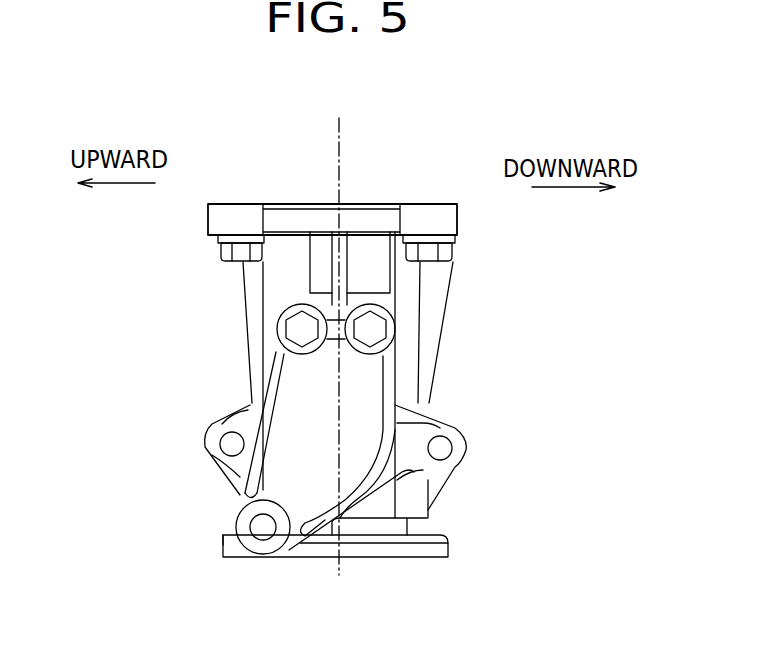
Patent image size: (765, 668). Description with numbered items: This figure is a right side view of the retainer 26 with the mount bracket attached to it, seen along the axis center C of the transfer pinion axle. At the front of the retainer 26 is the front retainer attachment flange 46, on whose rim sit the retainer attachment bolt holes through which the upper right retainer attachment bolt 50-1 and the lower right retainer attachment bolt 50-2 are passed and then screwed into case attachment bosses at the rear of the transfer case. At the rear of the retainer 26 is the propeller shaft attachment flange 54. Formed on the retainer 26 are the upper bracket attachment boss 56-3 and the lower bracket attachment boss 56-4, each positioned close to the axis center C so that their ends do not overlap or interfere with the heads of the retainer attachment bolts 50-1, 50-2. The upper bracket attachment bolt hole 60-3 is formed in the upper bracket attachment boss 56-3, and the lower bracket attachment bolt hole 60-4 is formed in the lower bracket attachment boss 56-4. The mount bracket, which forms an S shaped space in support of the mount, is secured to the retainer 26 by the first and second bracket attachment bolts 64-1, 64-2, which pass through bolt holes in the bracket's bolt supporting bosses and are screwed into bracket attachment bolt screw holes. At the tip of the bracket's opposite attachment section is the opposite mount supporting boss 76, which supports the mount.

The retainer 26 is at (335, 305).
The front retainer attachment flange 46 is at (246, 210).
The NO. 1 retainer attachment bolt 50-1 is at (222, 252).
The NO. 2 retainer attachment bolt 50-2 is at (447, 270).
The propeller shaft attachment flange 54 is at (448, 548).
The NO. 3 bracket attachment boss 56-3 is at (215, 458).
The NO. 4 bracket attachment boss 56-4 is at (460, 460).
The NO. 3 bracket attachment bolt hole 60-3 is at (228, 440).
The NO. 4 bracket attachment bolt hole 60-4 is at (443, 446).
The NO. 1 bracket attachment bolt 64-1 is at (296, 330).
The NO. 2 bracket attachment bolt 64-2 is at (377, 328).
The opposite mount supporting boss 76 is at (259, 556).
The axis center of transfer pinion axle C is at (341, 140).